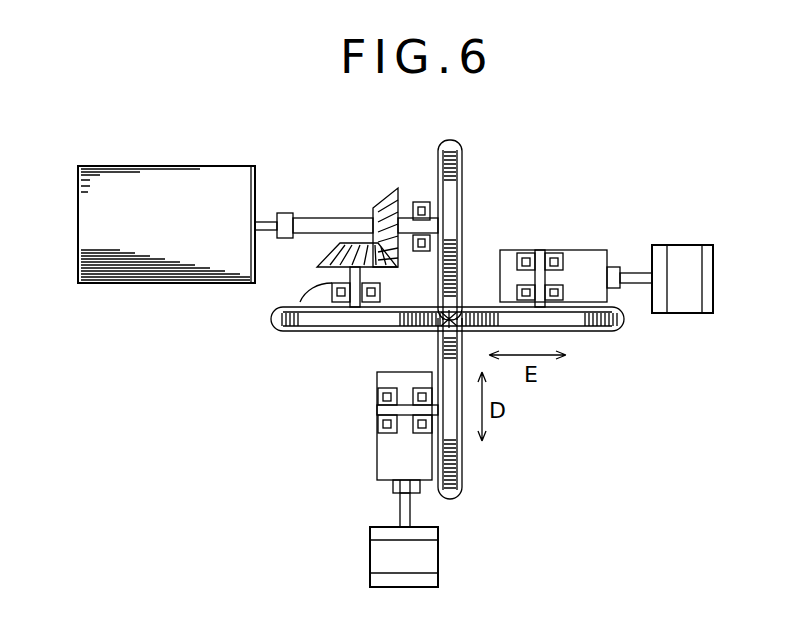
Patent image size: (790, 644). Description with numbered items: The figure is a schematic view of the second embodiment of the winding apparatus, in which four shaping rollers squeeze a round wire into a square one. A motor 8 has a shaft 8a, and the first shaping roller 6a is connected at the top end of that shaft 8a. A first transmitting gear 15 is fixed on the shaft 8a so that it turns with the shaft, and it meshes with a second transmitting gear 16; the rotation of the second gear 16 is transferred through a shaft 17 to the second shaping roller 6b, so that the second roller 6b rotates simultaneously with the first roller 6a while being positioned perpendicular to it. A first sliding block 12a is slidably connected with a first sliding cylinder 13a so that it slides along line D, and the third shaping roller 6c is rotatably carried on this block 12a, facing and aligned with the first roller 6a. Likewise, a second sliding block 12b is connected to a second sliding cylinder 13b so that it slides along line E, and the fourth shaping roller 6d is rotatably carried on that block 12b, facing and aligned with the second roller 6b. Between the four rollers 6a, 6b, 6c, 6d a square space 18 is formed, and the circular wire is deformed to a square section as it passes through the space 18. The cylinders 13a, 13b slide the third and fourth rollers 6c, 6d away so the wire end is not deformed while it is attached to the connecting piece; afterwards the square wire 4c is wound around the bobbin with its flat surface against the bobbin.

The motor 8 is at (78, 168).
The shaft 8a is at (318, 218).
The first transmitting gear 15 is at (393, 193).
The second transmitting gear 16 is at (318, 265).
The shaft 17 is at (285, 333).
The first shaping roller 6a is at (455, 142).
The second shaping roller 6b is at (348, 335).
The third shaping roller 6c is at (455, 455).
The fourth shaping roller 6d is at (623, 318).
The square wire 4c is at (433, 337).
The square space 18 is at (455, 290).
The first sliding block 12a is at (397, 457).
The second sliding block 12b is at (593, 263).
The first sliding cylinder 13a is at (430, 557).
The second sliding cylinder 13b is at (687, 257).